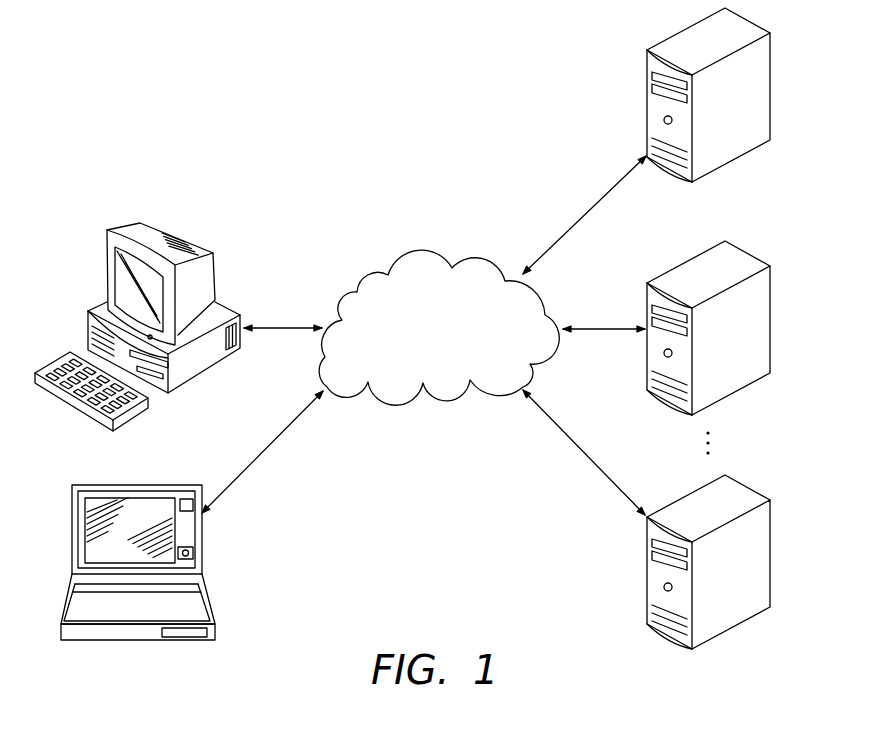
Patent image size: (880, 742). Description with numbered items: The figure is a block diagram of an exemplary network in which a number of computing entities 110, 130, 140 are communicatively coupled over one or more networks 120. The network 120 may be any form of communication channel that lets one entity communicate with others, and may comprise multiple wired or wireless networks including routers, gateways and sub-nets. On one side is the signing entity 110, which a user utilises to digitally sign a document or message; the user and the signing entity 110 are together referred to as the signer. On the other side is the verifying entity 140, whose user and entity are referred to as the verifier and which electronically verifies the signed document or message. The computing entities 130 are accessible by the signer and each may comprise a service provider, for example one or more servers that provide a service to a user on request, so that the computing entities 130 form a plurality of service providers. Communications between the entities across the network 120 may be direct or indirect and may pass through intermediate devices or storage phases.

The signing entity 110 is at (219, 251).
The network 120 is at (460, 337).
The computing entities 130 is at (647, 107).
The verifying entity 140 is at (209, 602).